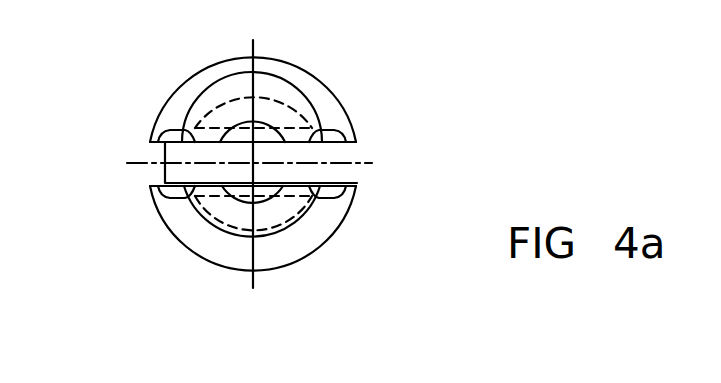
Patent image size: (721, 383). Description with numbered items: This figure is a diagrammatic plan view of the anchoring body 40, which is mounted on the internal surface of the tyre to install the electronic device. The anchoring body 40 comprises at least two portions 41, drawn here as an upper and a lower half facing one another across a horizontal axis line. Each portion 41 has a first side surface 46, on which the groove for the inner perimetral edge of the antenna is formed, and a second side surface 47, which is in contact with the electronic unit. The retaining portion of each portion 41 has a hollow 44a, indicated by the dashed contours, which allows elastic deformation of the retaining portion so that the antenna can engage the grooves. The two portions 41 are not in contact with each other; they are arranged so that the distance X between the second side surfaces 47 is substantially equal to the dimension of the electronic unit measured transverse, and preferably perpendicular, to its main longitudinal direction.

The anchoring body 40 is at (260, 180).
The portion 41 is at (162, 140).
The hollow 44a is at (237, 132).
The first side surface 46 is at (292, 92).
The second side surface 47 is at (338, 142).
The distance X is at (165, 168).